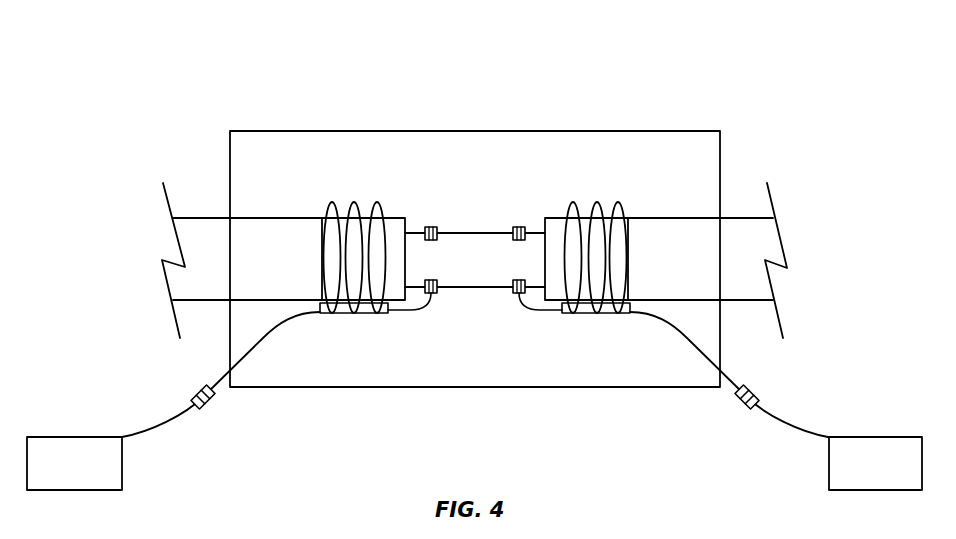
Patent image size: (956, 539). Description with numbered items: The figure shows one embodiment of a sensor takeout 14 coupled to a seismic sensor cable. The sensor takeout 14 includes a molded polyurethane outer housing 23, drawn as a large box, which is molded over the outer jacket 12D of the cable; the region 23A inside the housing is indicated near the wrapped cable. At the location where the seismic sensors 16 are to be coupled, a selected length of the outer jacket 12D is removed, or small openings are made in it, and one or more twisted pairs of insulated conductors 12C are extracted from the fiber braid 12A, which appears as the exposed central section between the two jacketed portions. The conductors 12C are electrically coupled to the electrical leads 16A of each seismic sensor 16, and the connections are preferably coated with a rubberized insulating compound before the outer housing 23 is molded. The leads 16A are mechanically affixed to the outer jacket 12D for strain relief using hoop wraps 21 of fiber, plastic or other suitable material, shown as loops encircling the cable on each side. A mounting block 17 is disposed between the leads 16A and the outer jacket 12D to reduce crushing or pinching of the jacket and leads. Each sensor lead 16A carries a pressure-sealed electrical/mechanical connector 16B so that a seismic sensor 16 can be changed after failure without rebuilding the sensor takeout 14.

The sensor takeout 14 is at (648, 63).
The outer housing 23 is at (523, 131).
The housing interior 23A is at (357, 155).
The outer jacket 12D is at (208, 217).
The fiber braid 12A is at (485, 270).
The twisted pairs of insulated conductors 12C is at (418, 222).
The mounting block 17 is at (310, 305).
The hoop wraps 21 is at (377, 188).
The electrical leads 16A is at (160, 428).
The pressure-sealed electrical/mechanical connector 16B is at (202, 388).
The seismic sensor 16 is at (48, 436).